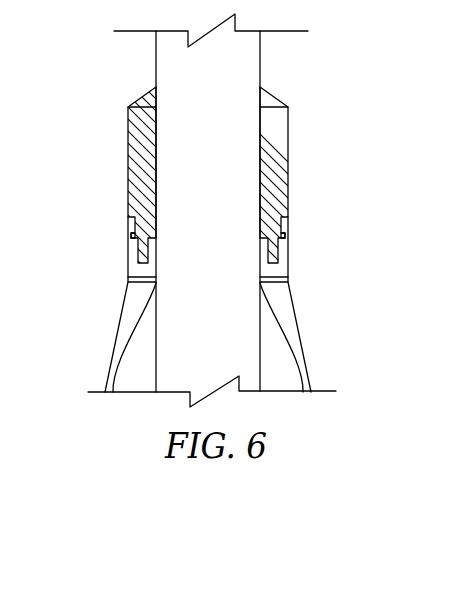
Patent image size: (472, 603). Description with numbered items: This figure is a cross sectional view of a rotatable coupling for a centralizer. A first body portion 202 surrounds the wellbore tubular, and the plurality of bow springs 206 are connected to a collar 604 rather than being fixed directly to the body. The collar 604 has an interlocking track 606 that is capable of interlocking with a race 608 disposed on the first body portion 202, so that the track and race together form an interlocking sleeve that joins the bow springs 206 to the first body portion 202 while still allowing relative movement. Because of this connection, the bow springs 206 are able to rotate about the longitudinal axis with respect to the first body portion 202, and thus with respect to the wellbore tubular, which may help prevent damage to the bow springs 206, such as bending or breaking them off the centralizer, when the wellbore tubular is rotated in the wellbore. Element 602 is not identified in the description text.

The first body portion 202 is at (200, 210).
The inner sleeve 602 is at (289, 168).
The collar 604 is at (289, 280).
The interlocking track 606 is at (259, 229).
The race 608 is at (285, 237).
The bow springs 206 is at (116, 339).